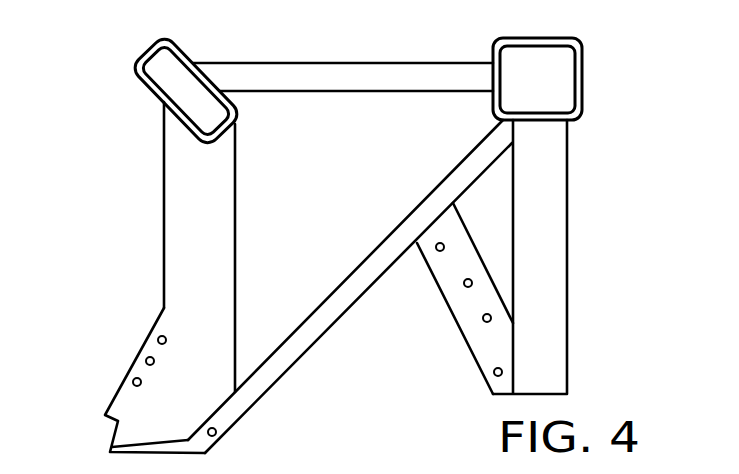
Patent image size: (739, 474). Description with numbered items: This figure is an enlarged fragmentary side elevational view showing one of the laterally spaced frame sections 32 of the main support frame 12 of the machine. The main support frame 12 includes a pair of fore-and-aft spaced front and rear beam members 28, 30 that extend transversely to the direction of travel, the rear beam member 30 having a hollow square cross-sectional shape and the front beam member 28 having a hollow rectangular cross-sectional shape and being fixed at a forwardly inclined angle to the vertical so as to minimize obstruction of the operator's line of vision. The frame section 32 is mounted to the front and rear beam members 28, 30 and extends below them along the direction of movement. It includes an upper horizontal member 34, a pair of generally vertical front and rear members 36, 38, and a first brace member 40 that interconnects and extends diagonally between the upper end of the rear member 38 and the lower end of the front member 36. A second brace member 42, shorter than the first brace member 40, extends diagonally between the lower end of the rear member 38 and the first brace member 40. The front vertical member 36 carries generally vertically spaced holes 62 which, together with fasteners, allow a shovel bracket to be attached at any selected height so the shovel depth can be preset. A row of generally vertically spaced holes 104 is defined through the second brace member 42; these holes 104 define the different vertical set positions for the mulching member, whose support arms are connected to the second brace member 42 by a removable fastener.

The main support frame 12 is at (87, 70).
The front beam member 28 is at (183, 47).
The rear beam member 30 is at (530, 38).
The frame section 32 is at (156, 173).
The upper horizontal member 34 is at (352, 63).
The front member 36 is at (235, 228).
The rear member 38 is at (567, 230).
The first brace member 40 is at (348, 276).
The second brace member 42 is at (477, 247).
The holes 62 is at (132, 382).
The holes 104 is at (483, 321).